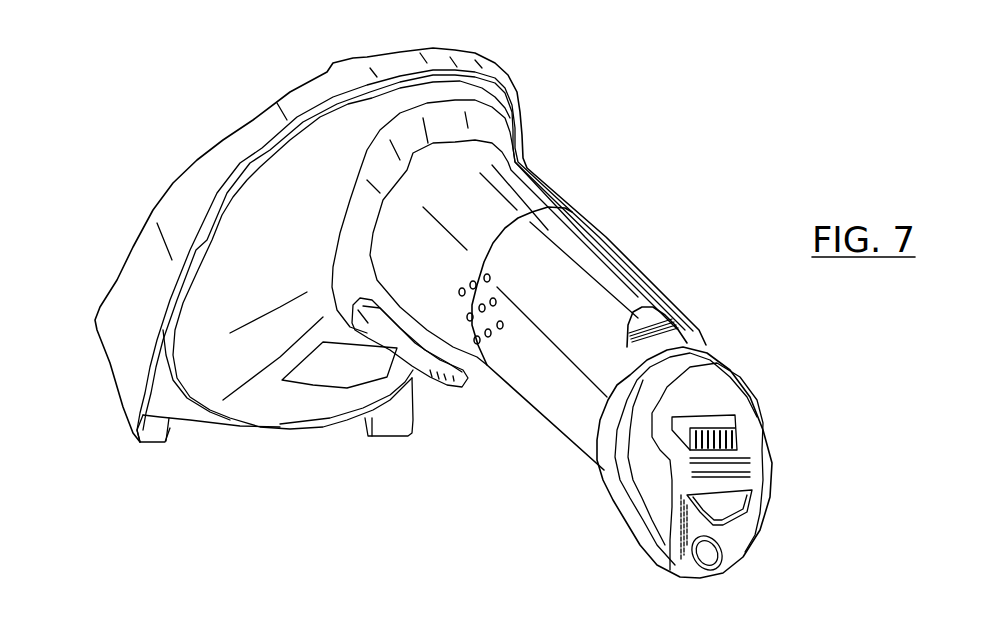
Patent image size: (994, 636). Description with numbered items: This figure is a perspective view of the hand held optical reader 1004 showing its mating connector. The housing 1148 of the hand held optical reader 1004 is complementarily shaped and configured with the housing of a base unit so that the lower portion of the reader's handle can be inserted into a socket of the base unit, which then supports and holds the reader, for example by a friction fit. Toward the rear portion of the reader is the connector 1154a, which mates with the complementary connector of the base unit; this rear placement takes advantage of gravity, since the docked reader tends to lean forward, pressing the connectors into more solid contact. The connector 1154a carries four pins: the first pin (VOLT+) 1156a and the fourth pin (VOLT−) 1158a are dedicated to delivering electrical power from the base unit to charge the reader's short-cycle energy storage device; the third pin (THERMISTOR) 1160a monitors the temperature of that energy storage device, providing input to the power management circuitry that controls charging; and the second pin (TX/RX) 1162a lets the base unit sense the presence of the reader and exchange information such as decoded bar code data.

The hand held optical reader 1004 is at (308, 82).
The housing 1148 is at (598, 260).
The connector 1154a is at (718, 422).
The Pin 2 (TX/RX) 1162a is at (720, 437).
The Pin 1 (VOLT+) 1156a is at (700, 447).
The Pin 3 (THERMISTOR) 1160a is at (713, 450).
The Pin 4 (VOLT−) 1158a is at (700, 447).